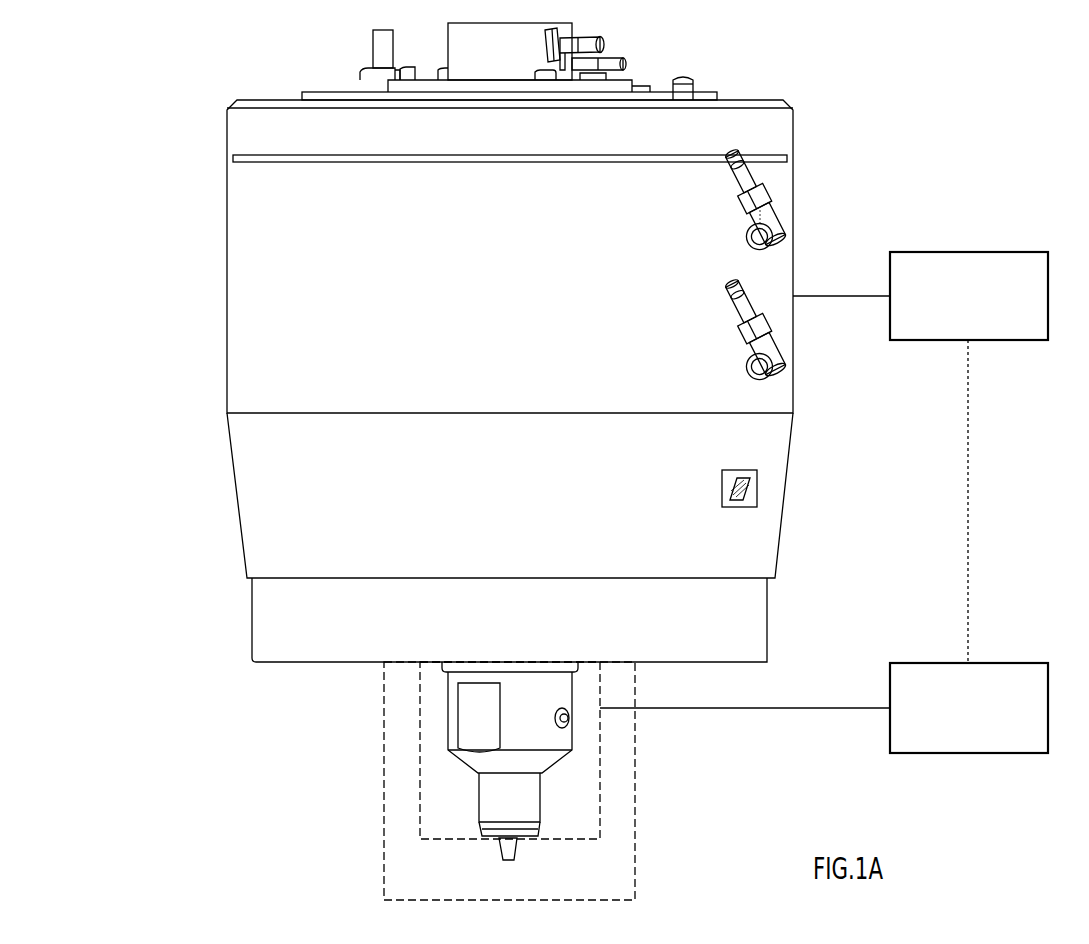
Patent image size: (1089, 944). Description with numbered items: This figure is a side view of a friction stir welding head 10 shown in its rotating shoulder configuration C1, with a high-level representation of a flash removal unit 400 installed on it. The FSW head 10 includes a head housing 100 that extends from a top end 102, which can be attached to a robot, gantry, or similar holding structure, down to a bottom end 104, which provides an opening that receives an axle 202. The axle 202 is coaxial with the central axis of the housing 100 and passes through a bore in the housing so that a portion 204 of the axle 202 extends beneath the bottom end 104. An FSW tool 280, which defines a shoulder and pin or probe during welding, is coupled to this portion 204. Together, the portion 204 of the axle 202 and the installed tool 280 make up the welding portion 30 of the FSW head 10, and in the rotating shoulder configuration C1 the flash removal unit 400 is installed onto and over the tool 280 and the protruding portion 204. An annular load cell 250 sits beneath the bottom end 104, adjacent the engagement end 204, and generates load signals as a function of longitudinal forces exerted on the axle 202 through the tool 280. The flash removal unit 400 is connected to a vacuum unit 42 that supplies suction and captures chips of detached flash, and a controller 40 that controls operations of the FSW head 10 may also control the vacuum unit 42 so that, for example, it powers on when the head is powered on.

The FSW head 10 is at (140, 297).
The rotating shoulder configuration C1 is at (130, 365).
The head housing 100 is at (240, 510).
The top end 102 is at (763, 93).
The bottom end 104 is at (777, 572).
The annular load cell 250 is at (258, 630).
The axle 202 is at (451, 735).
The portion of the axle 204 is at (545, 757).
The FSW tool 280 is at (483, 810).
The flash removal unit 400 is at (555, 842).
The welding portion 30 is at (636, 848).
The controller 40 is at (1000, 252).
The vacuum unit 42 is at (1000, 663).